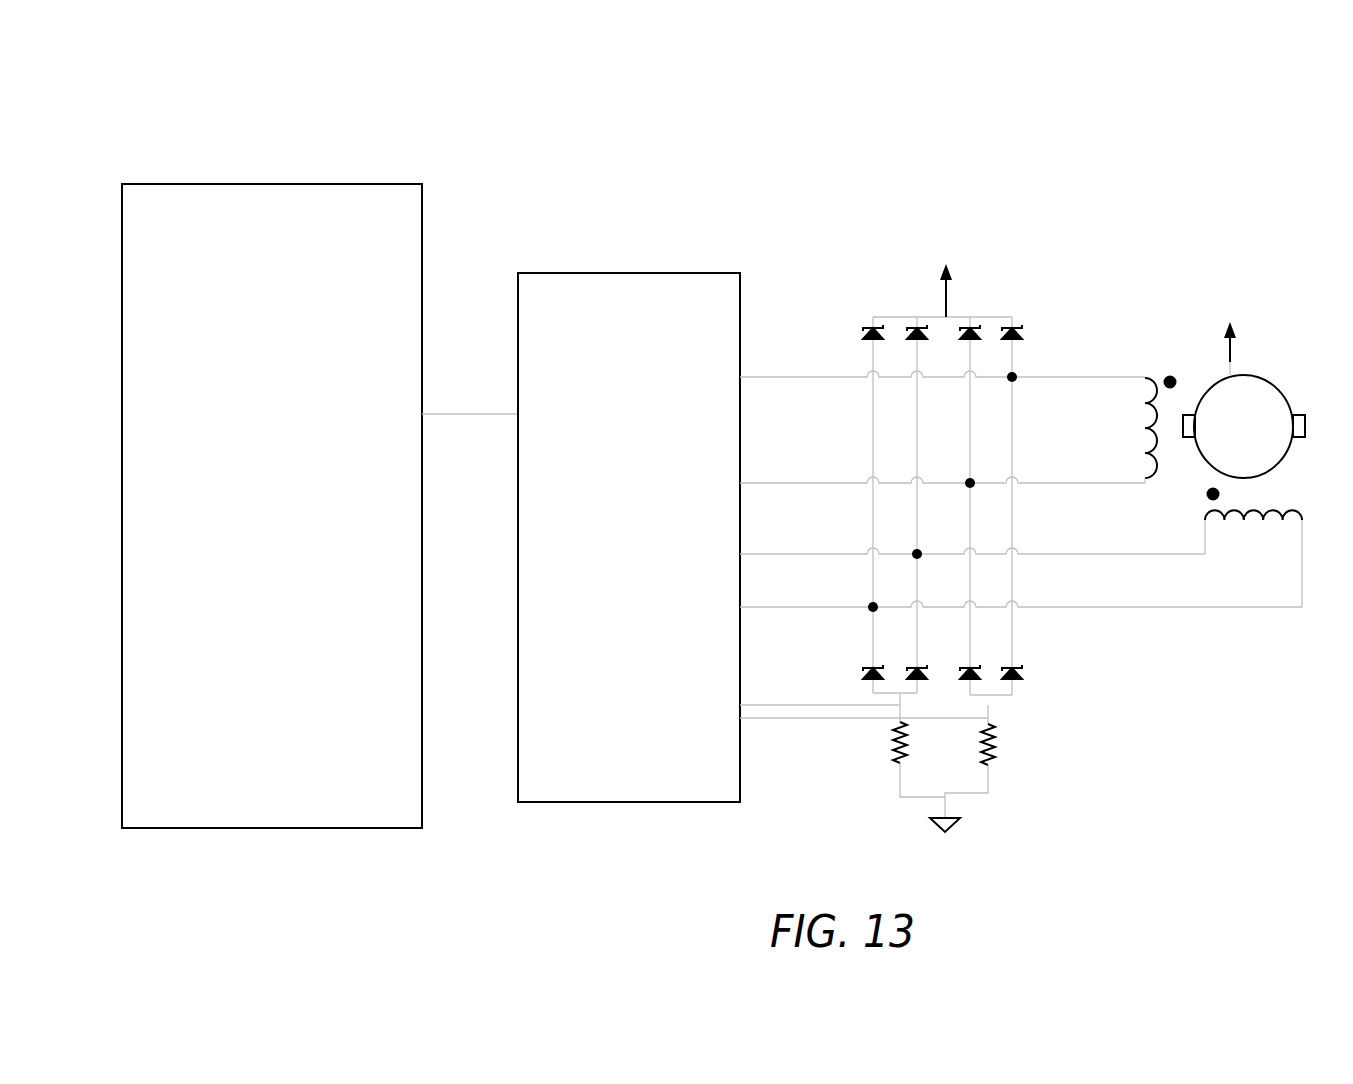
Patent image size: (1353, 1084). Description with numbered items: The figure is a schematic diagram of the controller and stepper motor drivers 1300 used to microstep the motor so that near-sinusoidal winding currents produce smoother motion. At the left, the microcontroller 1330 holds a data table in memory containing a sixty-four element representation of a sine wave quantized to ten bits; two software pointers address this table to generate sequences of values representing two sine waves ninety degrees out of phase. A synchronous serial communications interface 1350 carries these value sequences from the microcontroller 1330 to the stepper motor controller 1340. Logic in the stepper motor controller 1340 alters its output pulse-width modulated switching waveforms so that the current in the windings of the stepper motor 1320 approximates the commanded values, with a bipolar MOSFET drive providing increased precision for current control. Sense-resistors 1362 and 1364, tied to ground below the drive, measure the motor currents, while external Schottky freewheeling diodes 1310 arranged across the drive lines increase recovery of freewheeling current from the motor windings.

The controller and stepper motor drivers 1300 is at (180, 90).
The microcontroller 1330 is at (297, 183).
The stepper motor controller 1340 is at (598, 268).
The synchronous serial communications interface 1350 is at (507, 411).
The external Schottky freewheeling diodes 1310 is at (871, 289).
The stepper motor 1320 is at (1193, 349).
The sense-resistor 1362 is at (886, 750).
The sense-resistor 1364 is at (1002, 750).